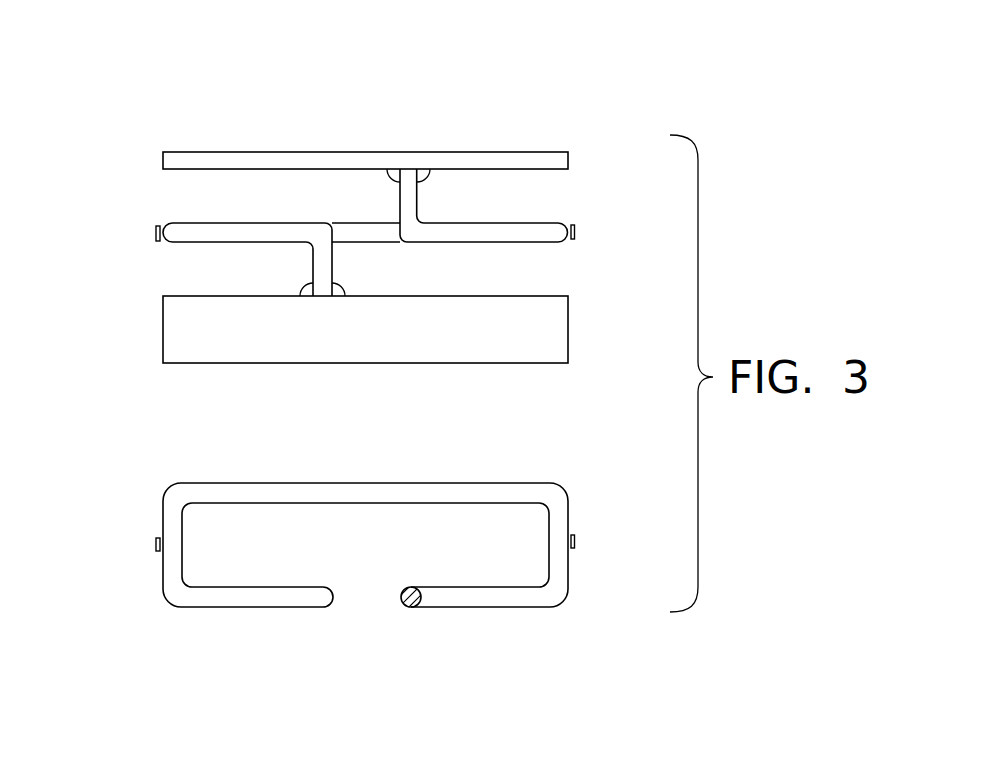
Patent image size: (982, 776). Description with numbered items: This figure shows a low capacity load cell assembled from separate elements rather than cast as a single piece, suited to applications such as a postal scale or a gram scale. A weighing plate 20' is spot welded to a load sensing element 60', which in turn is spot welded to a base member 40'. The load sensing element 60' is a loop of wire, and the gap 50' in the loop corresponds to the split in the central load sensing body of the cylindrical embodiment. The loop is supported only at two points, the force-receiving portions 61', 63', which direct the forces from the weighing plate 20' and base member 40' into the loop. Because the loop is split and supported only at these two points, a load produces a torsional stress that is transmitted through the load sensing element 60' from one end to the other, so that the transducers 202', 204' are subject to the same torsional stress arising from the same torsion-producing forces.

The weighing plate 20' is at (396, 164).
The base member 40' is at (396, 329).
The gap 50' is at (393, 631).
The load sensing element 60' is at (382, 397).
The force-receiving portion 61' is at (433, 202).
The force-receiving portion 63' is at (301, 263).
The transducer 202' is at (365, 392).
The transducer 204' is at (367, 393).